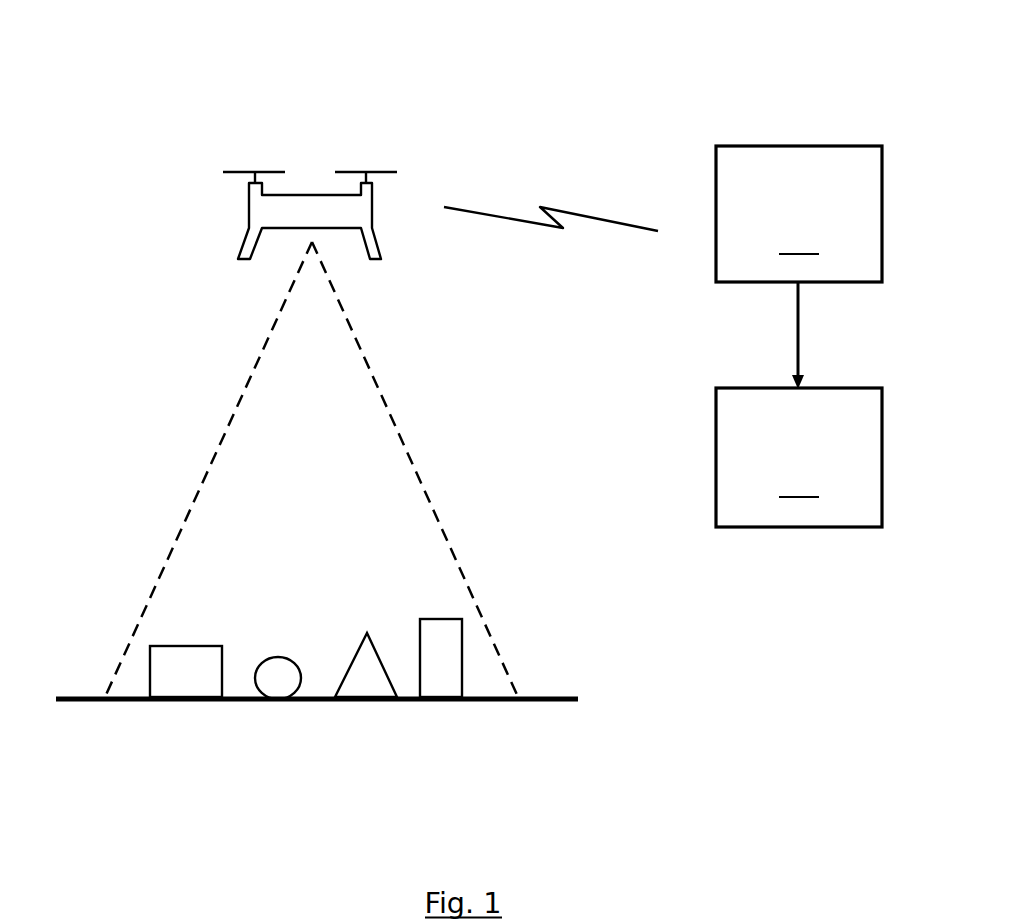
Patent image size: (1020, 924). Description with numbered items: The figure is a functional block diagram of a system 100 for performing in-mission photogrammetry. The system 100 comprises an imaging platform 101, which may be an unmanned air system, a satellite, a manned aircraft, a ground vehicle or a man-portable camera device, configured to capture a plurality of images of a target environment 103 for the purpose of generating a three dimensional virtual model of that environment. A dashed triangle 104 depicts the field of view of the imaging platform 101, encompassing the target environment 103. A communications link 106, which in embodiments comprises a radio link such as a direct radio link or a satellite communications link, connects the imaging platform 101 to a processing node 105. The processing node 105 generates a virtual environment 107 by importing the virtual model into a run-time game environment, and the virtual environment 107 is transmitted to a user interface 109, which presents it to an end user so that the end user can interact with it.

The system 100 is at (146, 109).
The imaging platform 101 is at (268, 208).
The target environment 103 is at (258, 591).
The dashed triangle 104 is at (423, 490).
The processing node 105 is at (799, 214).
The communications link 106 is at (570, 210).
The virtual environment 107 is at (798, 317).
The user interface 109 is at (799, 457).